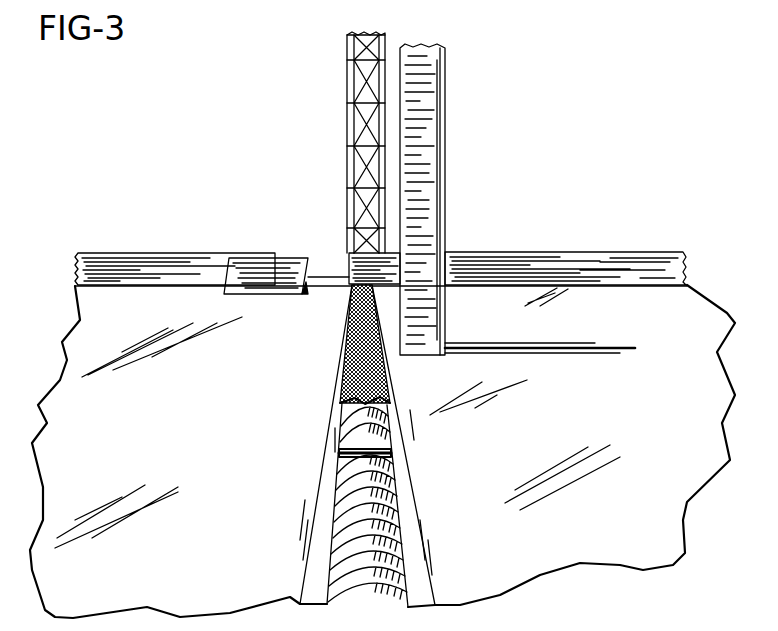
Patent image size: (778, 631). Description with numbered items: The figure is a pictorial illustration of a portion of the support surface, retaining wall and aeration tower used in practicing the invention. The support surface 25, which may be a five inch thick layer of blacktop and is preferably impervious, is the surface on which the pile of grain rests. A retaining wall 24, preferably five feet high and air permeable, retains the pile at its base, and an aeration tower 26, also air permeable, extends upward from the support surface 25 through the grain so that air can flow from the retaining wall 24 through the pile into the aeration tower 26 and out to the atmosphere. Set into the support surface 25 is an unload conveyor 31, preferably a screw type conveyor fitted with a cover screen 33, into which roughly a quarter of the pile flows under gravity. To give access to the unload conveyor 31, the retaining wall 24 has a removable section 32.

The retaining wall 24 is at (529, 253).
The support surface 25 is at (631, 423).
The aeration tower 26 is at (445, 113).
The unload conveyor 31 is at (380, 538).
The removable section 32 is at (285, 264).
The cover screen 33 is at (352, 338).